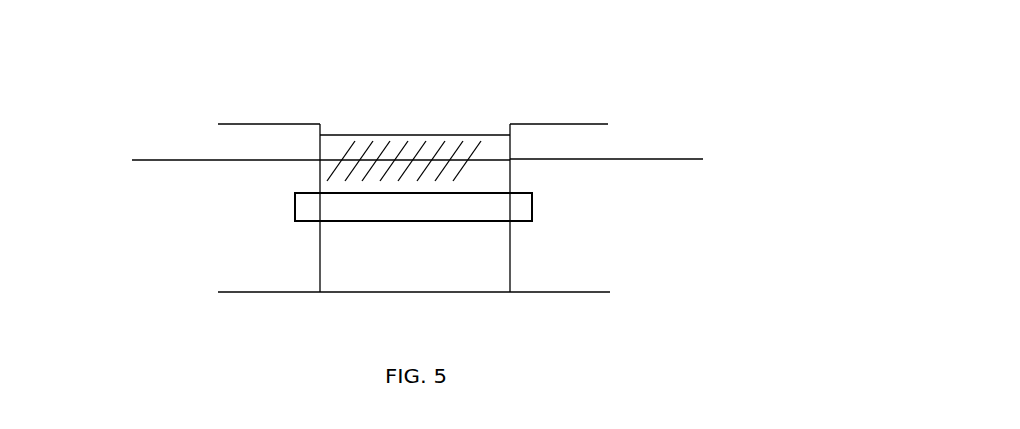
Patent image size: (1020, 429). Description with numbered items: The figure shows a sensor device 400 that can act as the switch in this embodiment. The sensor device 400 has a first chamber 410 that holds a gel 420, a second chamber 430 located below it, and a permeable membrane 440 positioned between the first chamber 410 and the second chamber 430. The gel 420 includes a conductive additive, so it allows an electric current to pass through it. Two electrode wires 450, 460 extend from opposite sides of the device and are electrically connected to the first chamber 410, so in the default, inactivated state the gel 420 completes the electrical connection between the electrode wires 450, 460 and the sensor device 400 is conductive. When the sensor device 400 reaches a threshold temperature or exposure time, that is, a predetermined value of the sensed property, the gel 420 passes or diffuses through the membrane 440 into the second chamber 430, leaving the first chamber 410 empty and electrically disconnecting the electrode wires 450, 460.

The sensor device 400 is at (747, 82).
The first chamber 410 is at (510, 175).
The gel 420 is at (457, 137).
The second chamber 430 is at (510, 262).
The permeable membrane 440 is at (295, 210).
The electrode wire 450 is at (158, 159).
The electrode wire 460 is at (667, 158).